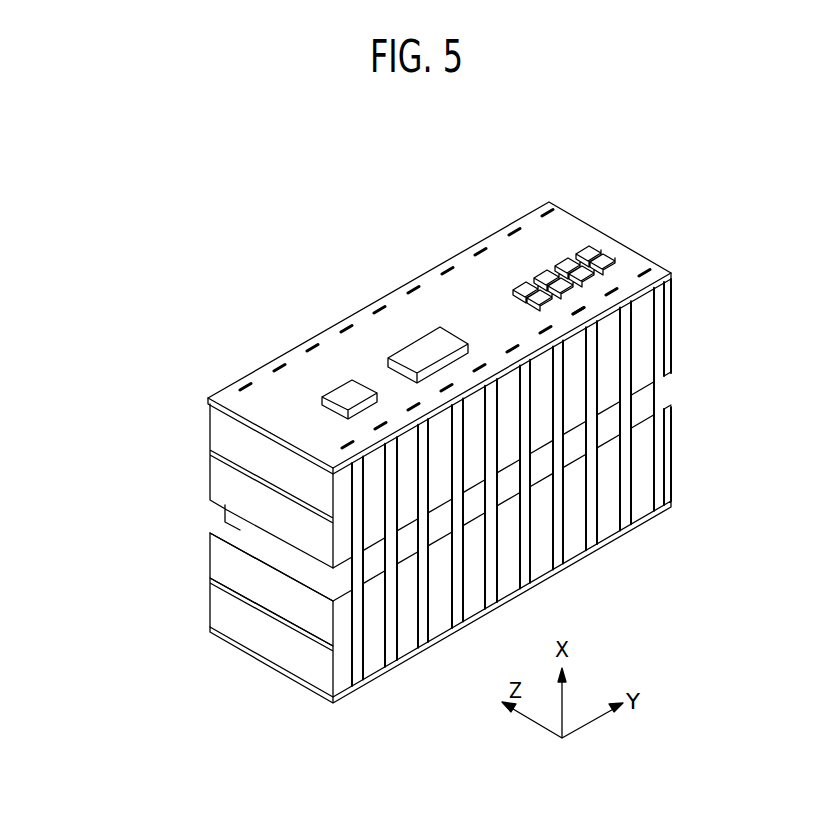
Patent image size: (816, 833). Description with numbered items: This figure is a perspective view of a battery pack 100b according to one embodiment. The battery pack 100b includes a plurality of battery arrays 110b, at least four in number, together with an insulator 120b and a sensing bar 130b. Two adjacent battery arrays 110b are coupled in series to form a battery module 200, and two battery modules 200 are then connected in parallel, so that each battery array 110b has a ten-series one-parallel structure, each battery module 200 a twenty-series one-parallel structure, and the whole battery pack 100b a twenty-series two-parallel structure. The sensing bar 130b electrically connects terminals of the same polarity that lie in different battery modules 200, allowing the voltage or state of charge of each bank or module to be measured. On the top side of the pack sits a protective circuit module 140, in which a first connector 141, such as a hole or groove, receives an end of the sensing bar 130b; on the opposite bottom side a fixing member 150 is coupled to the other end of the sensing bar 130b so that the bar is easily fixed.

The battery pack 100b is at (113, 194).
The battery array 110b is at (205, 430).
The insulator 120b is at (318, 652).
The sensing bar 130b is at (342, 676).
The protective circuit module 140 is at (632, 228).
The first connector 141 is at (592, 310).
The fixing member 150 is at (242, 665).
The battery module 200 is at (203, 550).